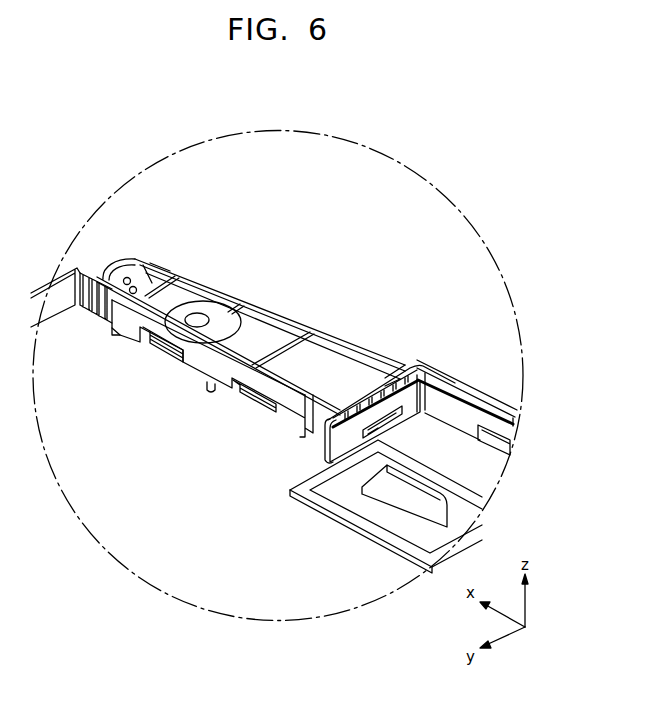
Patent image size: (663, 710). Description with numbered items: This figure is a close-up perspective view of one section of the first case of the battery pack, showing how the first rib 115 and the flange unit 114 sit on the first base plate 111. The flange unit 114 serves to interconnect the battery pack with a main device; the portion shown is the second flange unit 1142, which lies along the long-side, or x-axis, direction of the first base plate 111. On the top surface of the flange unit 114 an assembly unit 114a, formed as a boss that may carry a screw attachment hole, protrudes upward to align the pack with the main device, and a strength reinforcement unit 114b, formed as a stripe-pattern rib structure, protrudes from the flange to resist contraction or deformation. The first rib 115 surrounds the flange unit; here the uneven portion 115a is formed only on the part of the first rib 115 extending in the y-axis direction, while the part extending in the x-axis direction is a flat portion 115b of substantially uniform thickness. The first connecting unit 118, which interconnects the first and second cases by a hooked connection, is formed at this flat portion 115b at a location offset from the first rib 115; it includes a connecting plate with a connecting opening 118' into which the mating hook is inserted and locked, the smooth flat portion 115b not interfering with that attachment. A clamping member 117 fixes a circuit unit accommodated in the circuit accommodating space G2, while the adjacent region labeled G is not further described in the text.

The first base plate 111 is at (135, 522).
The flange unit 114 is at (262, 322).
The second flange unit 1142 is at (283, 350).
The assembly unit 114a is at (205, 316).
The strength reinforcement unit 114b is at (181, 270).
The first rib 115 is at (430, 370).
The uneven portion 115a is at (397, 372).
The flat portion 115b is at (282, 380).
The clamping member 117 is at (458, 407).
The first connecting unit 118 is at (196, 355).
The connecting opening 118' is at (249, 421).
The gap region G is at (220, 528).
The circuit accommodating space G2 is at (386, 506).